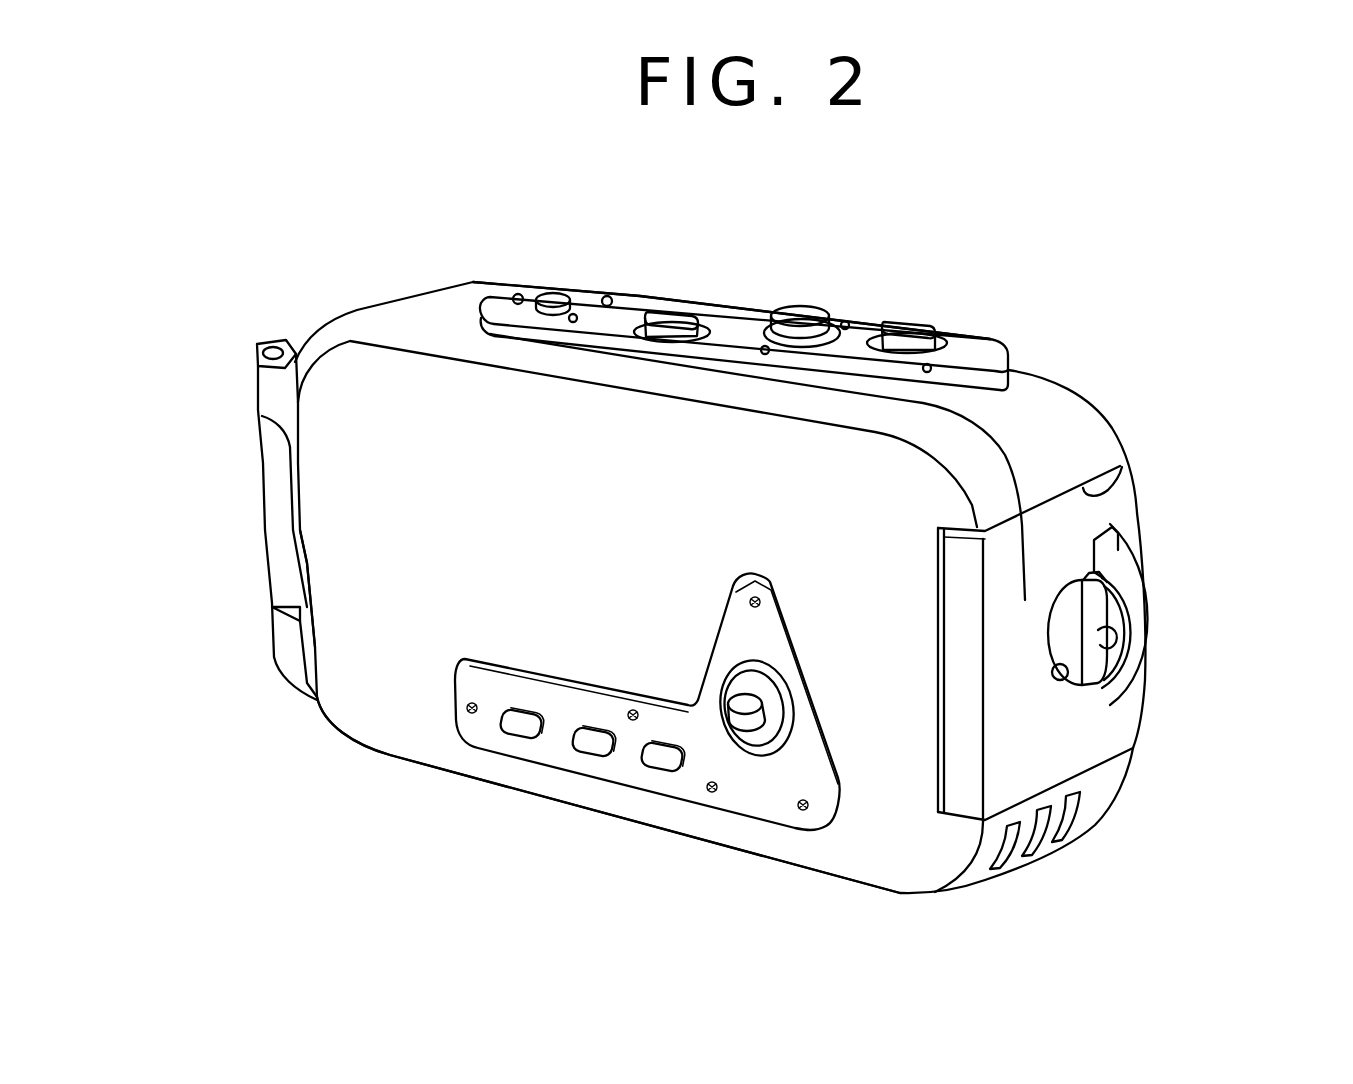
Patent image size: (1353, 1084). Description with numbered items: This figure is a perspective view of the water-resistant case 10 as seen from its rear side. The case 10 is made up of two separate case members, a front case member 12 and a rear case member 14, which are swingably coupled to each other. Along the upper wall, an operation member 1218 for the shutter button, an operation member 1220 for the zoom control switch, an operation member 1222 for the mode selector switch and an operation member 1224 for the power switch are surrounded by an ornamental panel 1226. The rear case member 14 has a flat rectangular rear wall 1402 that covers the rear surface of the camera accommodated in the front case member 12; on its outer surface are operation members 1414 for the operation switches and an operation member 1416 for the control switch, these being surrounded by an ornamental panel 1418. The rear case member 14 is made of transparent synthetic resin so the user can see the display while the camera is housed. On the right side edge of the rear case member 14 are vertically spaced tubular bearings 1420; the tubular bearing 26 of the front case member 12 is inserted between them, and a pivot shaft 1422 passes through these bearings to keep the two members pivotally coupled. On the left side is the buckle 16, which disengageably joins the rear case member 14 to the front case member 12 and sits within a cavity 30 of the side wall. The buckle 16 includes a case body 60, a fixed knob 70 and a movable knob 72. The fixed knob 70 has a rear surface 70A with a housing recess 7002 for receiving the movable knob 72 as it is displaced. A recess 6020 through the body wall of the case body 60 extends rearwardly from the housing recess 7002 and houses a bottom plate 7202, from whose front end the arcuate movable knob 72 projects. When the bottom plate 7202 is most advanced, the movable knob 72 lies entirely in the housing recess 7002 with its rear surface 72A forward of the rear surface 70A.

The water-resistant case 10 is at (1120, 349).
The front case member 12 is at (425, 300).
The rear case member 14 is at (385, 738).
The buckle 16 is at (1072, 735).
The tubular bearing 26 is at (277, 503).
The cavity 30 is at (1108, 470).
The case body 60 is at (1043, 765).
The fixed knob 70 is at (1143, 615).
The rear surface 70A is at (1120, 528).
The movable knob 72 is at (1120, 578).
The rear surface 72A is at (1092, 600).
The operation member 1218 is at (798, 309).
The operation member 1220 is at (912, 325).
The operation member 1222 is at (679, 316).
The operation member 1224 is at (553, 296).
The ornamental panel 1226 is at (986, 336).
The rear wall 1402 is at (418, 607).
The operation members 1414 is at (657, 762).
The operation member 1416 is at (750, 722).
The ornamental panel 1418 is at (712, 815).
The tubular bearing 1420 is at (257, 385).
The pivot shaft 1422 is at (274, 343).
The recess 6020 is at (1063, 680).
The housing recess 7002 is at (1123, 668).
The bottom plate 7202 is at (1062, 625).